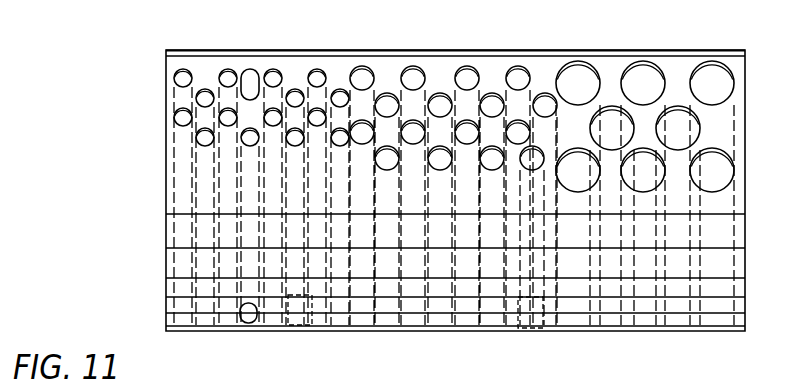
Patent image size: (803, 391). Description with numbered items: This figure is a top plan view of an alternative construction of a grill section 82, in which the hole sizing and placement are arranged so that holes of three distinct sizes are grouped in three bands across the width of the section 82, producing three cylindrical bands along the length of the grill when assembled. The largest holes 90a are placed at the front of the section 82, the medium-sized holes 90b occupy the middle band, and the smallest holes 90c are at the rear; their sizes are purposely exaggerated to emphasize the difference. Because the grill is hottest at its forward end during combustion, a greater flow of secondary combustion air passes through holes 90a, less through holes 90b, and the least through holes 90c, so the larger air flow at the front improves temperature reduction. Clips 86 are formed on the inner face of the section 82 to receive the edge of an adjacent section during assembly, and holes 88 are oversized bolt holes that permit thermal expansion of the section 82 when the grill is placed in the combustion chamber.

The grill section 82 is at (703, 53).
The clips 86 is at (303, 327).
The holes 88 is at (250, 68).
The largest holes 90a is at (692, 64).
The medium-sized holes 90b is at (512, 66).
The smallest holes 90c is at (317, 68).